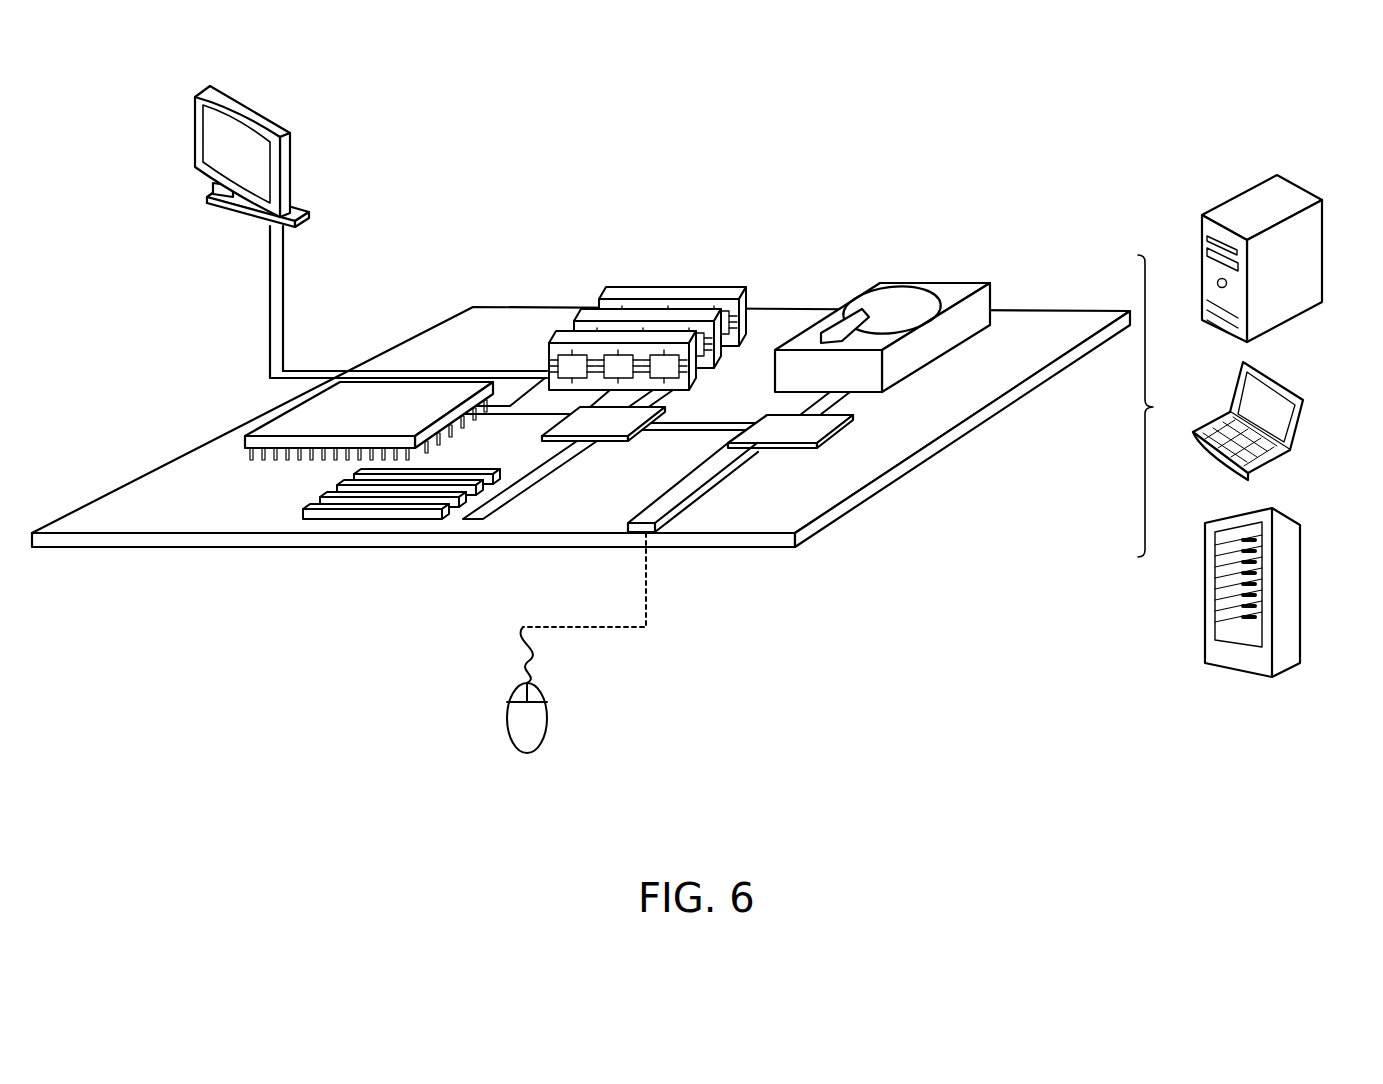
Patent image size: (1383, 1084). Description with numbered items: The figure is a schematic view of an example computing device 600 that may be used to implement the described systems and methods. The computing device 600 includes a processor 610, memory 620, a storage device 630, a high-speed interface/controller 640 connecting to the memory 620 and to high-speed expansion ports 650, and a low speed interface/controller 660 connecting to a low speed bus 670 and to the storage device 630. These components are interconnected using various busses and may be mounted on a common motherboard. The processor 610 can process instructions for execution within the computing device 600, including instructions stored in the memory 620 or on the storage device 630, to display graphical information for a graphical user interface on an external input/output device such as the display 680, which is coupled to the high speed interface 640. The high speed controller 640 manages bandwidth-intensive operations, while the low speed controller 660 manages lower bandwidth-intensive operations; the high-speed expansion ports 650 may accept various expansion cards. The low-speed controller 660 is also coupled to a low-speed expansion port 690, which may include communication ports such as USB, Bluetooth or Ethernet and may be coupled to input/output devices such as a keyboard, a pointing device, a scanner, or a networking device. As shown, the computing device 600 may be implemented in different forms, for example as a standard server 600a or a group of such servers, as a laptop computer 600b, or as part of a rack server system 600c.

The computing device 600 is at (748, 155).
The standard server 600a is at (1232, 203).
The laptop computer 600b is at (1284, 400).
The rack server system 600c is at (1298, 576).
The processor 610 is at (245, 438).
The memory 620 is at (665, 300).
The storage device 630 is at (930, 284).
The high-speed interface/controller 640 is at (612, 440).
The high-speed expansion ports 650 is at (303, 513).
The low speed interface/controller 660 is at (780, 424).
The low speed bus 670 is at (728, 486).
The display 680 is at (196, 141).
The low-speed expansion port 690 is at (652, 547).